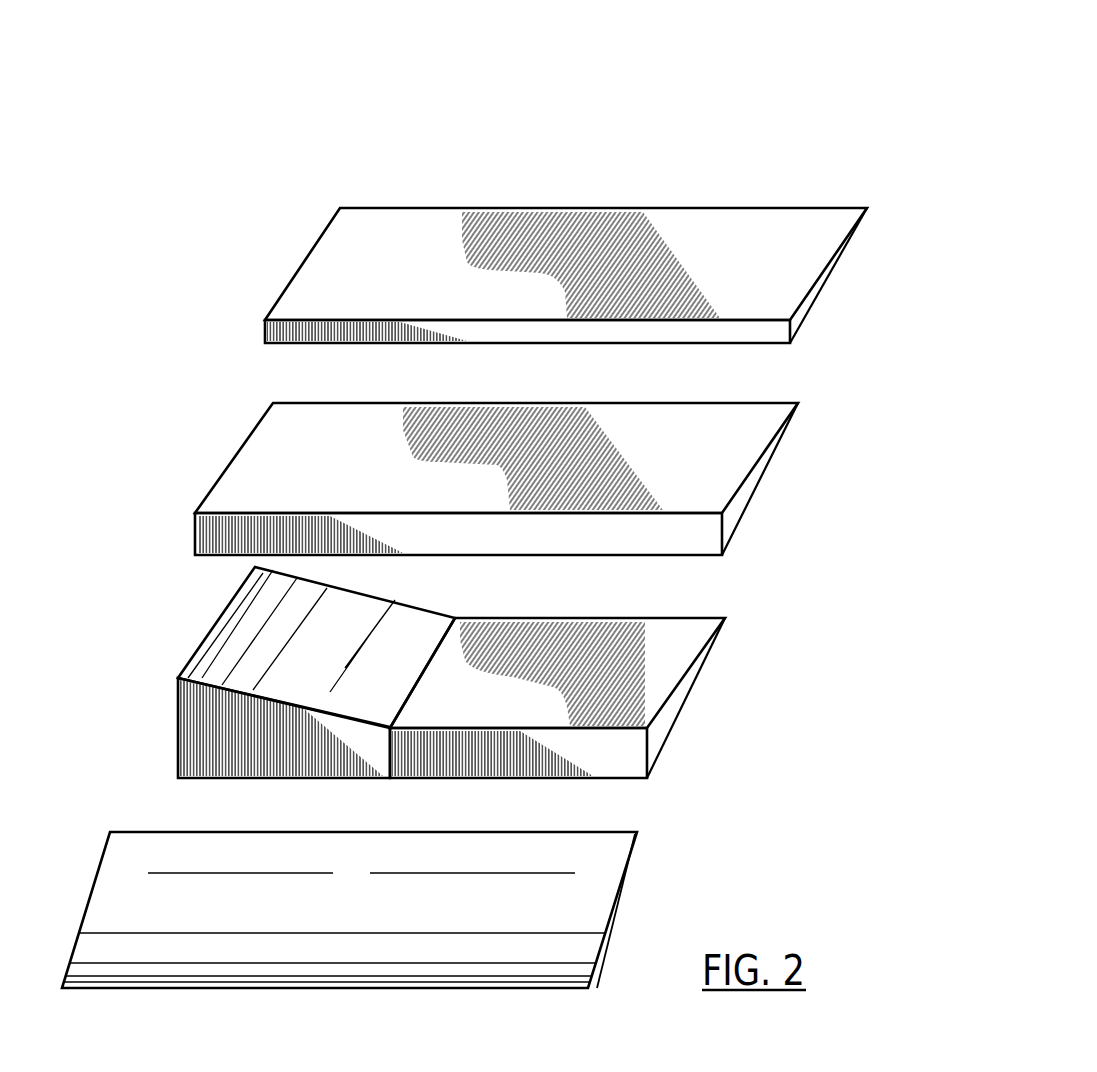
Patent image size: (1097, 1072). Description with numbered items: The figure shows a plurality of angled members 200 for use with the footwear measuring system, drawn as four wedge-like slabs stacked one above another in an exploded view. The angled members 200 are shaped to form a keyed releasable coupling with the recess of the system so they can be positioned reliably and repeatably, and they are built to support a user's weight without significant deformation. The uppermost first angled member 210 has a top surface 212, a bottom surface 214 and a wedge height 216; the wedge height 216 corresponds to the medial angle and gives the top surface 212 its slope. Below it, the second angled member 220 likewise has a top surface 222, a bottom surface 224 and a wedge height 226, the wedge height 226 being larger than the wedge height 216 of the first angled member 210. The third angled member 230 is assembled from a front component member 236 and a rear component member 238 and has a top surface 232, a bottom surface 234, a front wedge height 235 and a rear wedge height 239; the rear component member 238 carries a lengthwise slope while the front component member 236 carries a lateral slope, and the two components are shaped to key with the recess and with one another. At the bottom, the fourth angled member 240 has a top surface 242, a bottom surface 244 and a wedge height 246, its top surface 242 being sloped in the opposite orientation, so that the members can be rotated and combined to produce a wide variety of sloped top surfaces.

The angled members 200 is at (743, 110).
The first angled member 210 is at (877, 182).
The top surface 212 is at (763, 228).
The bottom surface 214 is at (830, 285).
The wedge height 216 is at (262, 320).
The second angled member 220 is at (830, 415).
The top surface 222 is at (702, 438).
The bottom surface 224 is at (758, 487).
The wedge height 226 is at (188, 515).
The third angled member 230 is at (763, 645).
The top surface 232 is at (673, 643).
The bottom surface 234 is at (703, 668).
The front wedge height 235 is at (680, 728).
The front component member 236 is at (560, 642).
The rear component member 238 is at (360, 642).
The rear wedge height 239 is at (172, 678).
The fourth angled member 240 is at (703, 862).
The top surface 242 is at (573, 862).
The bottom surface 244 is at (622, 915).
The wedge height 246 is at (644, 832).